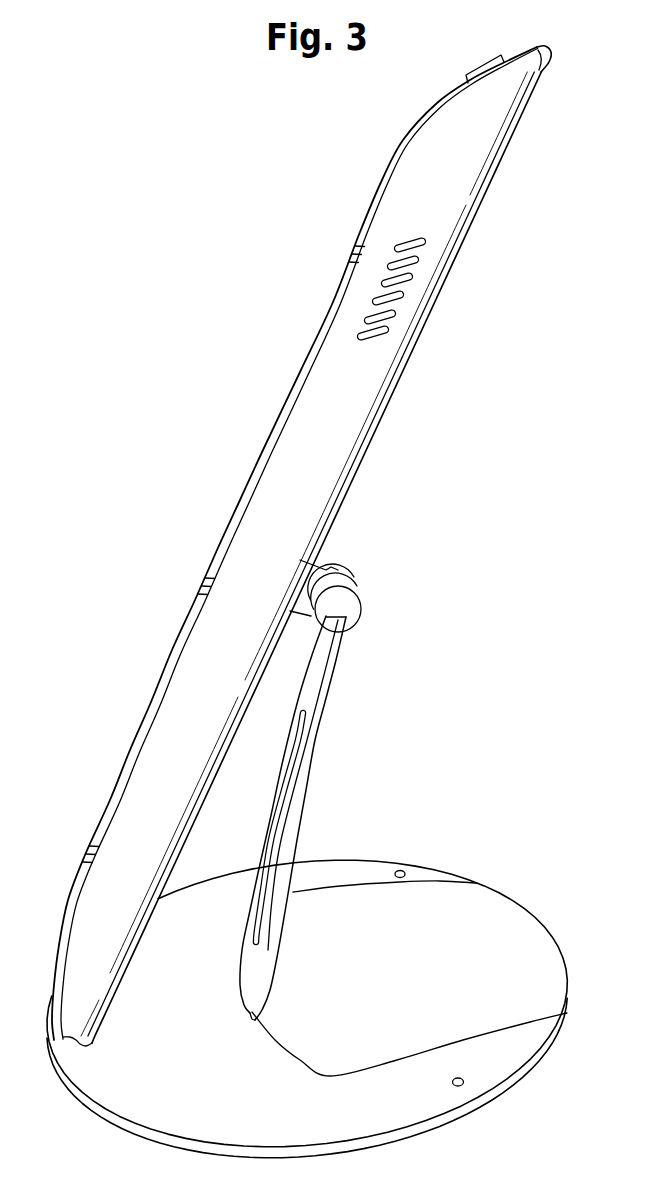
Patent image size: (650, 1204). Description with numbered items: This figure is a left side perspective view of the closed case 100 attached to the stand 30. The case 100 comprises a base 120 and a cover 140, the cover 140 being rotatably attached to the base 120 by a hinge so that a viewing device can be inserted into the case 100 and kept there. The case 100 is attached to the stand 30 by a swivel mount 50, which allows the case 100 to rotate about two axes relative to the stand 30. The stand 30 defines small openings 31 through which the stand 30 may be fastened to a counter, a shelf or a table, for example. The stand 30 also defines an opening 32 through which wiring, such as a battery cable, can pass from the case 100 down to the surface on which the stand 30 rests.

The case 100 is at (301, 546).
The base 120 is at (327, 463).
The cover 140 is at (303, 363).
The swivel mount 50 is at (361, 605).
The opening 32 is at (282, 818).
The stand 30 is at (498, 1057).
The small openings 31 is at (400, 870).